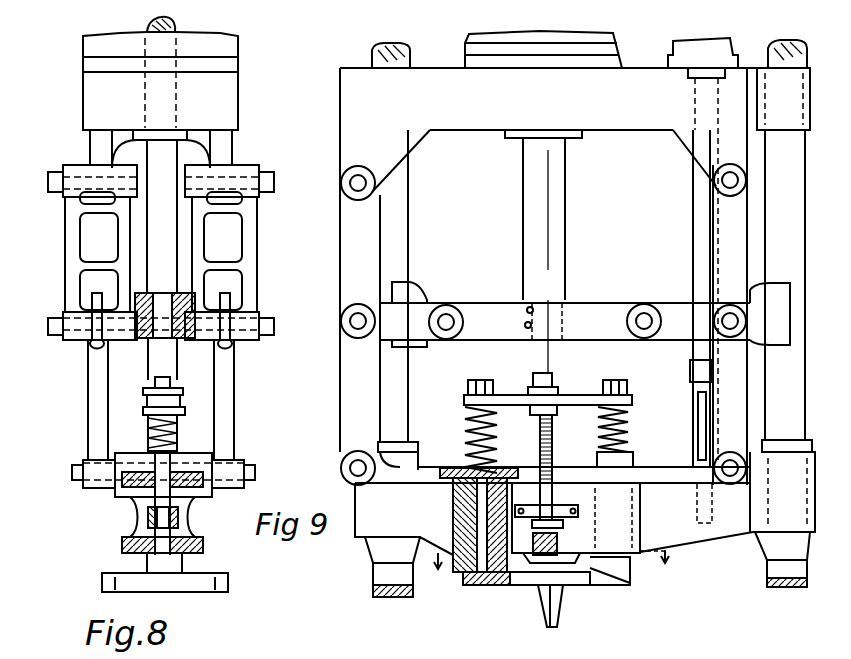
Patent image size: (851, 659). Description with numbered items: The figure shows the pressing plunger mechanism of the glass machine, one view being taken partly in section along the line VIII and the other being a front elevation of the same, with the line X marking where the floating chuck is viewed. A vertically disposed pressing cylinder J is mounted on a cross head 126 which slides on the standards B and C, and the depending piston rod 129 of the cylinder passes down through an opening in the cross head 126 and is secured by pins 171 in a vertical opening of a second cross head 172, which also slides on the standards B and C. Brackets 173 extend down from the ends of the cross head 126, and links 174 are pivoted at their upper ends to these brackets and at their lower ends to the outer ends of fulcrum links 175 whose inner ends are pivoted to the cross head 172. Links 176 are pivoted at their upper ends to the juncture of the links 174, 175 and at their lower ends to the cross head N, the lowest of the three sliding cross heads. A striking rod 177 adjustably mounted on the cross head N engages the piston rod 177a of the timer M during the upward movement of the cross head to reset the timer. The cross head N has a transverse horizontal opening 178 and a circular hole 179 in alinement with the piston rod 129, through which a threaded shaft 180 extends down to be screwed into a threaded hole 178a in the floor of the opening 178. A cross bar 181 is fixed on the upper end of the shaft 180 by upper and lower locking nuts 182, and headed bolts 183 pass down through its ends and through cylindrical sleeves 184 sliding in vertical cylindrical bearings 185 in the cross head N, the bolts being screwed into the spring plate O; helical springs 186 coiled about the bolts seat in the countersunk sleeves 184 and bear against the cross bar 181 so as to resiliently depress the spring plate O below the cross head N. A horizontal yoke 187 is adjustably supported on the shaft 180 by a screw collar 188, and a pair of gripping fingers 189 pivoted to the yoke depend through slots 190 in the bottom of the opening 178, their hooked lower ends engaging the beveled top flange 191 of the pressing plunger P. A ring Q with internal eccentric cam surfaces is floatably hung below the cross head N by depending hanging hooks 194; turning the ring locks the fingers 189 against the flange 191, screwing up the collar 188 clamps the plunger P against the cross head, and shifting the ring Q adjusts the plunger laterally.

In FIG. 8, the cross head 126 is at (160, 78).
In FIG. 9, the cross head 126 is at (543, 66).
In FIG. 8, the pressing cylinder J is at (238, 57).
In FIG. 9, the pressing cylinder J is at (466, 43).
In FIG. 8, the brackets 173 is at (90, 145).
In FIG. 9, the brackets 173 is at (690, 148).
In FIG. 8, the links 174 is at (66, 233).
In FIG. 9, the links 174 is at (352, 252).
In FIG. 8, the cross head 172 is at (190, 298).
In FIG. 9, the cross head 172 is at (585, 327).
In FIG. 8, the fulcrum links 175 is at (270, 322).
In FIG. 9, the fulcrum links 175 is at (392, 323).
In FIG. 8, the links 176 is at (88, 392).
In FIG. 9, the links 176 is at (348, 383).
In FIG. 8, the vertical cylindrical bearings 185 is at (197, 519).
In FIG. 9, the vertical cylindrical bearings 185 is at (452, 499).
In FIG. 8, the horizontal yoke 187 is at (148, 512).
In FIG. 9, the horizontal yoke 187 is at (579, 512).
In FIG. 8, the screw collar 188 is at (150, 522).
In FIG. 9, the screw collar 188 is at (564, 527).
In FIG. 8, the spring plate O is at (225, 592).
In FIG. 9, the spring plate O is at (617, 586).
In FIG. 9, the section line VIII— VIII is at (548, 32).
In FIG. 9, the timer M is at (733, 43).
In FIG. 9, the standard C is at (408, 205).
In FIG. 9, the standard B is at (784, 260).
In FIG. 9, the piston rod of the timer 177a is at (698, 203).
In FIG. 9, the piston rod 129 is at (565, 232).
In FIG. 9, the pins 171 is at (533, 308).
In FIG. 9, the locking nuts 182 is at (561, 402).
In FIG. 9, the cross bar 181 is at (518, 393).
In FIG. 9, the headed bolts 183 is at (624, 380).
In FIG. 9, the threaded shaft 180 is at (554, 460).
In FIG. 9, the circular hole 179 is at (553, 470).
In FIG. 9, the helical springs 186 is at (469, 421).
In FIG. 9, the cylindrical sleeves 184 is at (640, 437).
In FIG. 9, the striking rod 177 is at (706, 396).
In FIG. 9, the slots 190 is at (486, 533).
In FIG. 9, the gripping fingers 189 is at (488, 586).
In FIG. 9, the threaded hole 178a is at (504, 586).
In FIG. 9, the transverse horizontal opening 178 is at (576, 518).
In FIG. 9, the cross head N is at (727, 519).
In FIG. 9, the section line X— X is at (548, 572).
In FIG. 9, the pressing plunger P is at (554, 606).
In FIG. 9, the ring Q is at (533, 565).
In FIG. 9, the beveled top flange 191 is at (543, 560).
In FIG. 9, the hanging hooks 194 is at (631, 585).